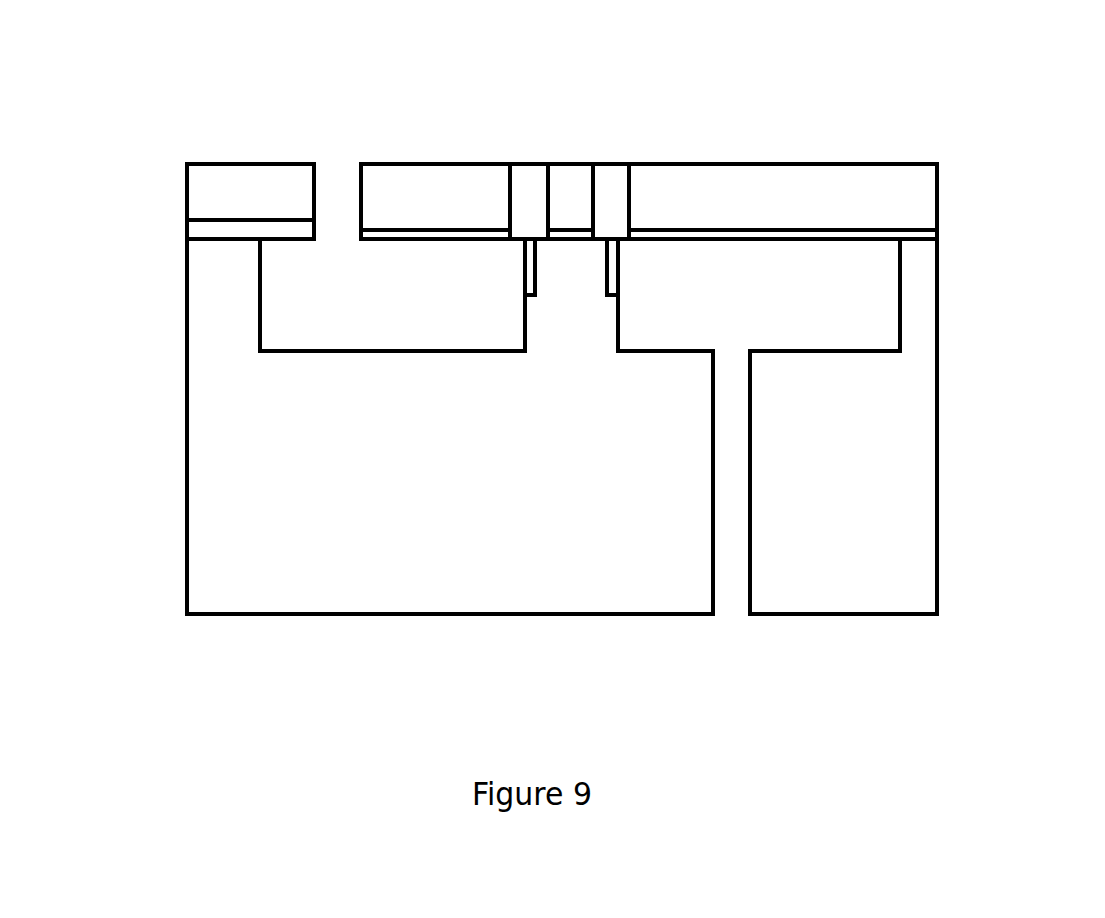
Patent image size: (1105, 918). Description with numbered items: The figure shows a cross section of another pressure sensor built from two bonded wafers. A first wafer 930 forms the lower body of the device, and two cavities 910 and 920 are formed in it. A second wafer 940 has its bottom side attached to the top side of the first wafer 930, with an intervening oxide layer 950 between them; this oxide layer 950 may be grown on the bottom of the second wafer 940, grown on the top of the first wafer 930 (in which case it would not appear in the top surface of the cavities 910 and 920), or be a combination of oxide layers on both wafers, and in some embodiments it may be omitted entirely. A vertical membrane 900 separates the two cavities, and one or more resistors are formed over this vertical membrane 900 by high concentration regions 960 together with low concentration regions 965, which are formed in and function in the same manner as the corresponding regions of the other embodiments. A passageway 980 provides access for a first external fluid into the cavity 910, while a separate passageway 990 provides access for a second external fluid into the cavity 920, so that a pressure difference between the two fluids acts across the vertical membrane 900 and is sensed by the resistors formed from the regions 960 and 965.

The vertical membrane 900 is at (560, 303).
The cavity 910 is at (328, 313).
The cavity 920 is at (870, 295).
The first wafer 930 is at (898, 445).
The second wafer 940 is at (917, 162).
The oxide layer 950 is at (938, 232).
The high concentration regions 960 is at (612, 192).
The low concentration regions 965 is at (613, 267).
The passageway 980 is at (335, 182).
The passageway 990 is at (731, 548).